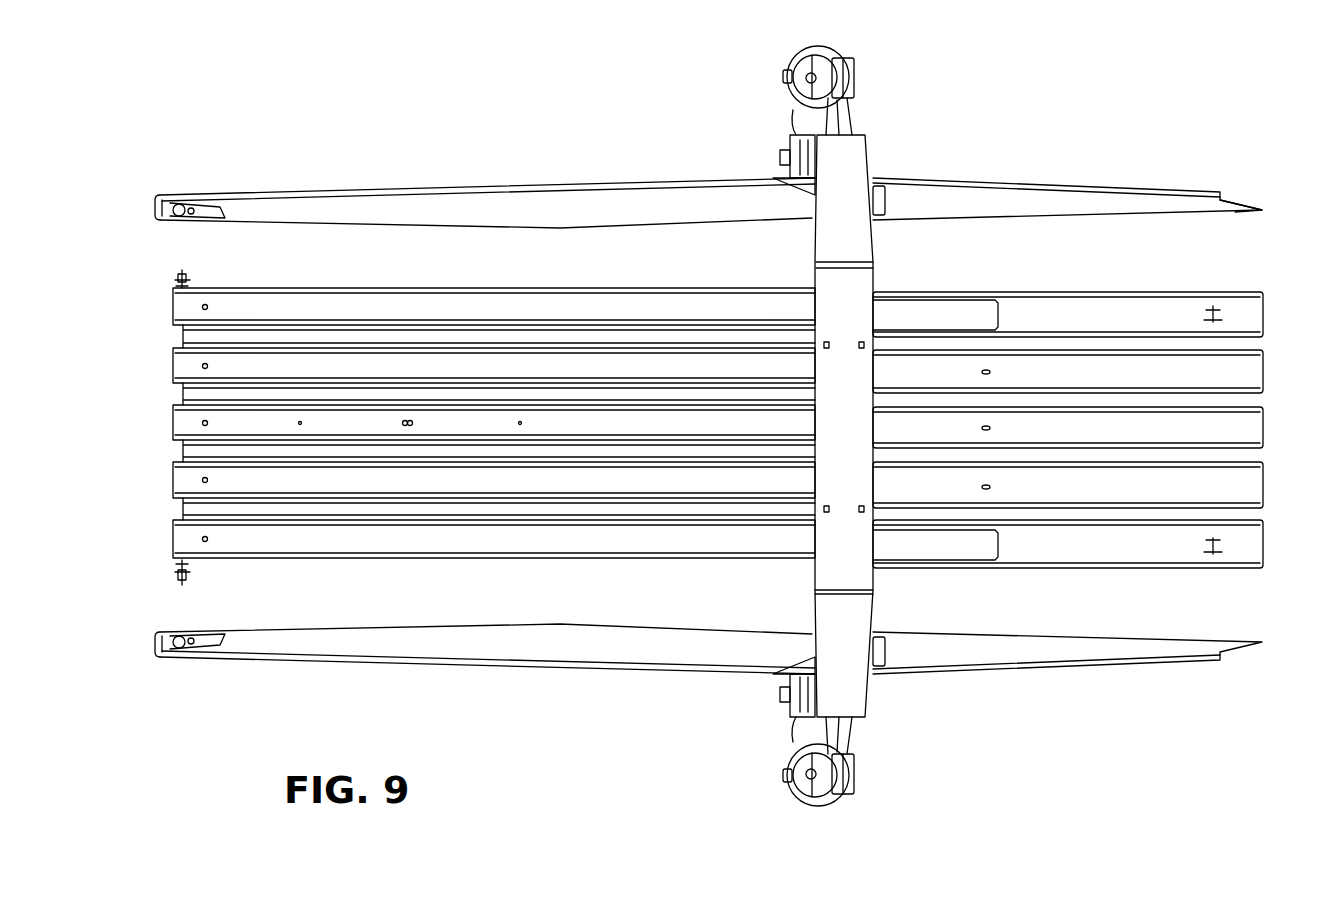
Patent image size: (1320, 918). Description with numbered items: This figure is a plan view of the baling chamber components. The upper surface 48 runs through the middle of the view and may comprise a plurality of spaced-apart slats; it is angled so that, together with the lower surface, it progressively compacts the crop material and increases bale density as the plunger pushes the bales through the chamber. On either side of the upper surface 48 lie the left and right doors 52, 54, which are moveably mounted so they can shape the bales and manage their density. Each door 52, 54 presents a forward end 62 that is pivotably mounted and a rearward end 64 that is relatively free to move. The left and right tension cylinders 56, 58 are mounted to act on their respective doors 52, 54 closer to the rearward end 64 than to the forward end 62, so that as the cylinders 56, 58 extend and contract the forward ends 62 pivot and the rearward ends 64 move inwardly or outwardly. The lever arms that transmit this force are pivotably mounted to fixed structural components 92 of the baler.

The upper surface 48 is at (1060, 308).
The left door 52 is at (680, 660).
The right door 54 is at (680, 200).
The left tension cylinder 56 is at (852, 802).
The right tension cylinder 58 is at (870, 58).
The forward end 62 is at (128, 208).
The rearward end 64 is at (1268, 200).
The fixed structural components 92 is at (853, 160).